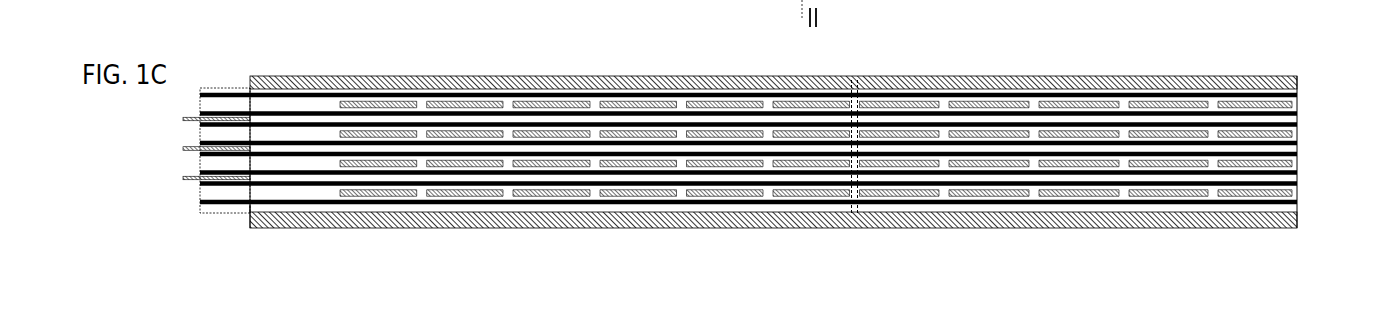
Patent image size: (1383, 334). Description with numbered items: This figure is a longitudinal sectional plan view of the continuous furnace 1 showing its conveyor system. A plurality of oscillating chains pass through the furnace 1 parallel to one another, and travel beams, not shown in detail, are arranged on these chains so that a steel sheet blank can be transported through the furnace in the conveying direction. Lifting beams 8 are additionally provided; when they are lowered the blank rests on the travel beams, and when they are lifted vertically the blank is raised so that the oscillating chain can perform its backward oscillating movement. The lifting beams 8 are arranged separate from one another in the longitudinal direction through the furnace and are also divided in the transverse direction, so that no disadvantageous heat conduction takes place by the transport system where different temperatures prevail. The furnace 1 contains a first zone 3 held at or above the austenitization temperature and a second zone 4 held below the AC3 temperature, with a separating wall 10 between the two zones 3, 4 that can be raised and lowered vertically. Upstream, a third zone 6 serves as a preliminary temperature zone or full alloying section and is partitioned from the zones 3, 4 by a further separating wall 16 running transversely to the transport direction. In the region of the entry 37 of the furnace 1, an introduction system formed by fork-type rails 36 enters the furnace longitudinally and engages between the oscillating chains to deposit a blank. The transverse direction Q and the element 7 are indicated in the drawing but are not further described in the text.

The furnace 1 is at (1272, 57).
The first zone 3 is at (1030, 178).
The second zone 4 is at (1133, 103).
The third zone 6 is at (590, 150).
The contact region 7 is at (221, 206).
The lifting beams 8 is at (452, 196).
The separating wall 10 is at (1032, 118).
The separating wall 16 is at (850, 177).
The fork-type rails 36 is at (186, 177).
The entry 37 is at (248, 223).
The transverse direction Q is at (928, 242).